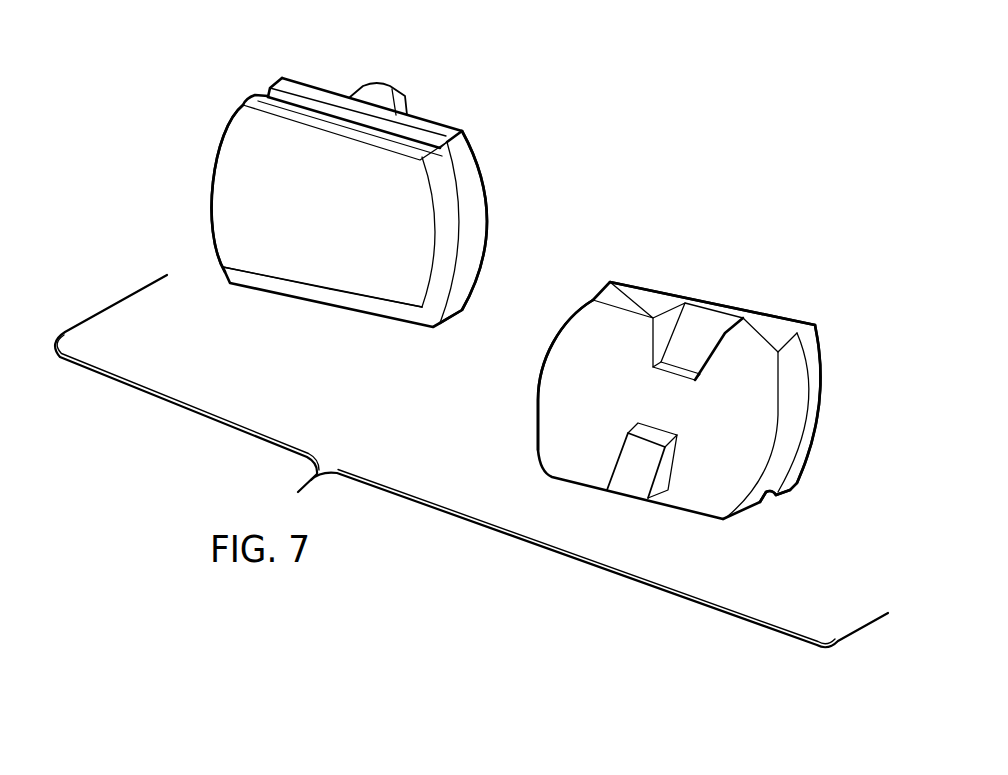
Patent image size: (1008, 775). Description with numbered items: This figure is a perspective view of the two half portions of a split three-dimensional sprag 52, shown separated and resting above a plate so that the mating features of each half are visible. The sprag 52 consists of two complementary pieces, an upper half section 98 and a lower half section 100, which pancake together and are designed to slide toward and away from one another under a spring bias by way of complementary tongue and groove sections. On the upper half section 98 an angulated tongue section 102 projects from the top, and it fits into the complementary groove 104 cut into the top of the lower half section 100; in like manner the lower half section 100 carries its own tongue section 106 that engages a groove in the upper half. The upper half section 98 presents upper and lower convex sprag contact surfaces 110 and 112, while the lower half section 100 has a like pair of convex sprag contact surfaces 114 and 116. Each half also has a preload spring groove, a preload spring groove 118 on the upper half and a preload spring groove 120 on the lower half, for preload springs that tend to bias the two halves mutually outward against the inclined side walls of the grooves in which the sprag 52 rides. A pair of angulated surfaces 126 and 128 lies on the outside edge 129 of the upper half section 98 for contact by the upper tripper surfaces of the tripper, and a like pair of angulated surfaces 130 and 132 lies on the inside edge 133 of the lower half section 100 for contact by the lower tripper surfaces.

The sprag 52 is at (482, 407).
The upper half section 98 is at (346, 186).
The lower half section 100 is at (710, 367).
The angulated tongue section 102 is at (403, 88).
The groove 104 is at (692, 313).
The tongue section 106 is at (625, 483).
The upper convex sprag contact surface 110 is at (212, 200).
The lower convex sprag contact surface 112 is at (443, 218).
The convex sprag contact surface 114 is at (598, 300).
The convex sprag contact surface 116 is at (812, 427).
The preload spring groove 118 is at (296, 98).
The preload spring groove 120 is at (773, 497).
The angulated surface 126 is at (388, 306).
The angulated surface 128 is at (455, 318).
The outside edge 129 is at (312, 300).
The angulated surface 130 is at (755, 333).
The angulated surface 132 is at (803, 332).
The inside edge 133 is at (633, 283).